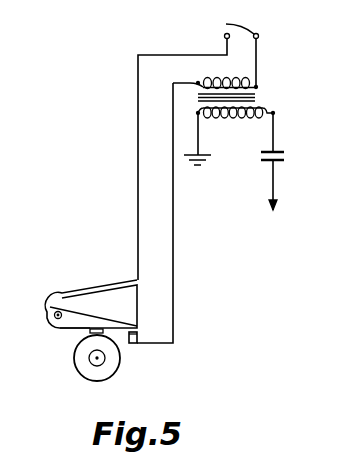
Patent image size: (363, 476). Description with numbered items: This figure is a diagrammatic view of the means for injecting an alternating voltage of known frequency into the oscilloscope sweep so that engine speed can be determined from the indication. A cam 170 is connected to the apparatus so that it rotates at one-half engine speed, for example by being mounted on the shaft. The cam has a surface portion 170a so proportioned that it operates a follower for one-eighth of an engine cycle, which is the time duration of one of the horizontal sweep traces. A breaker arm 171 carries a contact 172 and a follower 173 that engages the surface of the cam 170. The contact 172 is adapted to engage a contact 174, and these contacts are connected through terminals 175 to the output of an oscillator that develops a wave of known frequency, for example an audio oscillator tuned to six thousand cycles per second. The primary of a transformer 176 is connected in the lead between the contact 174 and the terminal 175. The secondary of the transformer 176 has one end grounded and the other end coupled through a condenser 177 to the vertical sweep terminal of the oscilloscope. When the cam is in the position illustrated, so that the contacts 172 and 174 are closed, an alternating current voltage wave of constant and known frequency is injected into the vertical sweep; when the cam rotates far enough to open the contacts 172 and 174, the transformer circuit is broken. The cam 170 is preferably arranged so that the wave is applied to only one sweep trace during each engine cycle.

The cam 170 is at (88, 366).
The surface portion 170a is at (111, 334).
The breaker arm 171 is at (108, 321).
The contact 172 is at (136, 333).
The follower 173 is at (74, 332).
The contact 174 is at (138, 334).
The terminals 175 is at (226, 24).
The transformer 176 is at (255, 101).
The condenser 177 is at (262, 163).